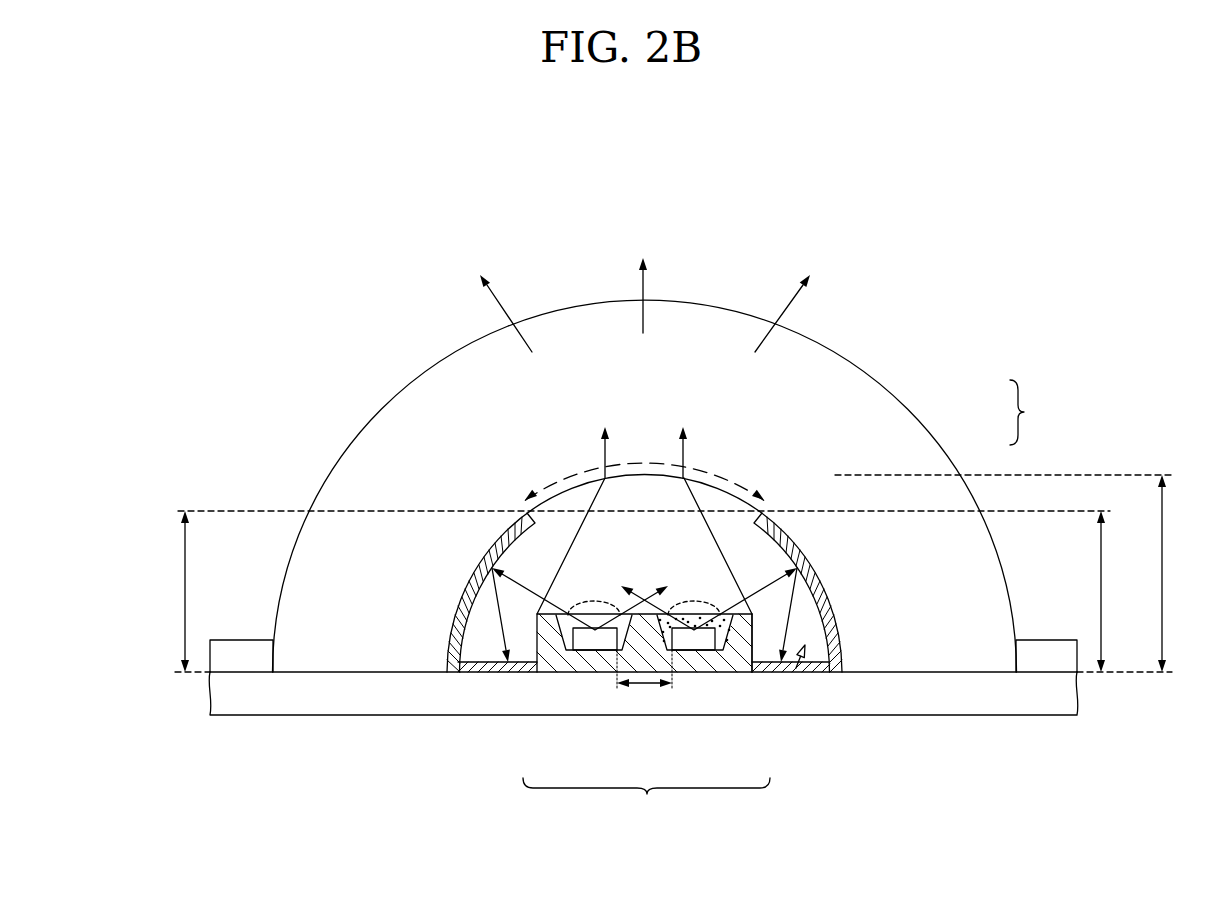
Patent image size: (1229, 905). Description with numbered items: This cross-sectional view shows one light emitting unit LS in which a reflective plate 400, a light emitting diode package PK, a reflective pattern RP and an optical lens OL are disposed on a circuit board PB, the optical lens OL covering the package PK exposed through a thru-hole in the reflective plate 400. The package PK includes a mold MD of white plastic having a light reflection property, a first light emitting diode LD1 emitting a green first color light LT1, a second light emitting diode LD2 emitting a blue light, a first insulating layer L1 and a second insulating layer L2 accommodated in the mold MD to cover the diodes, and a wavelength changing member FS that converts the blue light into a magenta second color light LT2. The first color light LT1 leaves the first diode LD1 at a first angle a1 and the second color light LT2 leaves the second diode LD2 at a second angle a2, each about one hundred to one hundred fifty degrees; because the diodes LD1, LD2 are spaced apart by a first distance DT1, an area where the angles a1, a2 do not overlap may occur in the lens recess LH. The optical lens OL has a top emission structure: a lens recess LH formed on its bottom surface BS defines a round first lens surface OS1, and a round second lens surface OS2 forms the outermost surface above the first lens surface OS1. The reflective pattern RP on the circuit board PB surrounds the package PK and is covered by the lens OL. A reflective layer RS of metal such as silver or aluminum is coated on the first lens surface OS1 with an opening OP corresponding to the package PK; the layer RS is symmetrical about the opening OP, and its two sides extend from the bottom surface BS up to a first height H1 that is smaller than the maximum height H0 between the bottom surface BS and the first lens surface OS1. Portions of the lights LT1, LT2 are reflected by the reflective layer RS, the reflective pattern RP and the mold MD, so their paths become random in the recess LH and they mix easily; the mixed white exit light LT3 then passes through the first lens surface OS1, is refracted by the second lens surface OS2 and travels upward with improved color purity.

The light emitting unit LS is at (953, 238).
The exit light LT3 is at (503, 283).
The second lens surface OS2 is at (893, 393).
The first lens surface OS1 is at (772, 508).
The optical lens OL is at (665, 486).
The first color light LT1 is at (588, 508).
The opening OP is at (644, 470).
The second color light LT2 is at (702, 508).
The first height H1 is at (649, 591).
The maximum height H0 is at (1017, 573).
The reflective layer RS is at (467, 585).
The first angle a1 is at (594, 597).
The second angle a2 is at (694, 597).
The bottom surface BS is at (342, 674).
The circuit board PB is at (400, 702).
The reflective pattern RP is at (497, 670).
The mold MD is at (550, 655).
The first insulating layer L1 is at (565, 650).
The first light emitting diode LD1 is at (596, 640).
The second light emitting diode LD2 is at (694, 640).
The second insulating layer L2 is at (722, 648).
The wavelength changing member FS is at (750, 632).
The lens recess LH is at (802, 672).
The reflective plate 400 is at (1047, 660).
The light emitting diode package PK is at (646, 717).
The first distance DT1 is at (644, 680).